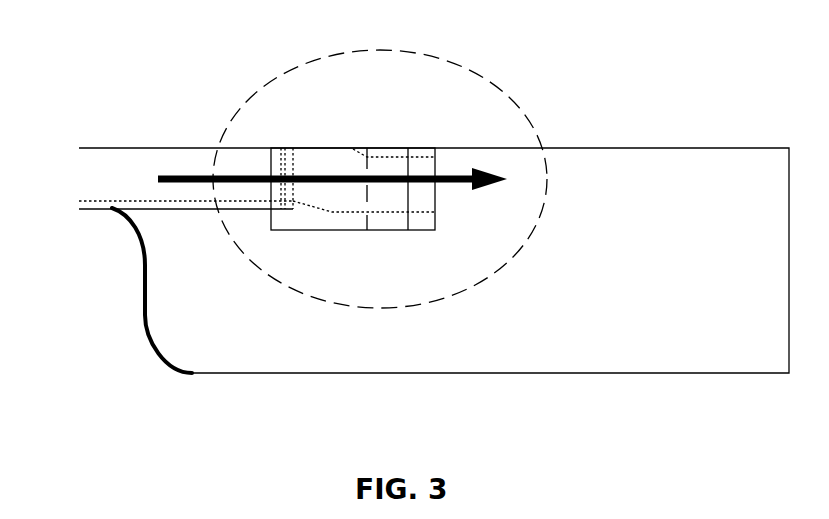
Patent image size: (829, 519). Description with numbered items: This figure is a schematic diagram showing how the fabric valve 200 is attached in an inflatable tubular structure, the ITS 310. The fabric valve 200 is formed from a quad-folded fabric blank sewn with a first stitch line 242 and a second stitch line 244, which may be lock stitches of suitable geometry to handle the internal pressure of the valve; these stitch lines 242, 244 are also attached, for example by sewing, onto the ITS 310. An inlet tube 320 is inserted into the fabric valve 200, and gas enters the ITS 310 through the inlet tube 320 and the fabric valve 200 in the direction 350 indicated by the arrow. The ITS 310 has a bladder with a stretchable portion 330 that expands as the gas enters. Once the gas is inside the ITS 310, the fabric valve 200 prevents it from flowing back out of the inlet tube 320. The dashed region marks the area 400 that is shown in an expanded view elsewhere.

The fabric valve 200 is at (303, 148).
The first stitch line 242 is at (397, 157).
The second stitch line 244 is at (337, 213).
The ITS 310 is at (498, 373).
The inlet tube 320 is at (97, 211).
The stretchable portion 330 is at (147, 346).
The direction 350 is at (450, 185).
The area 400 is at (477, 73).